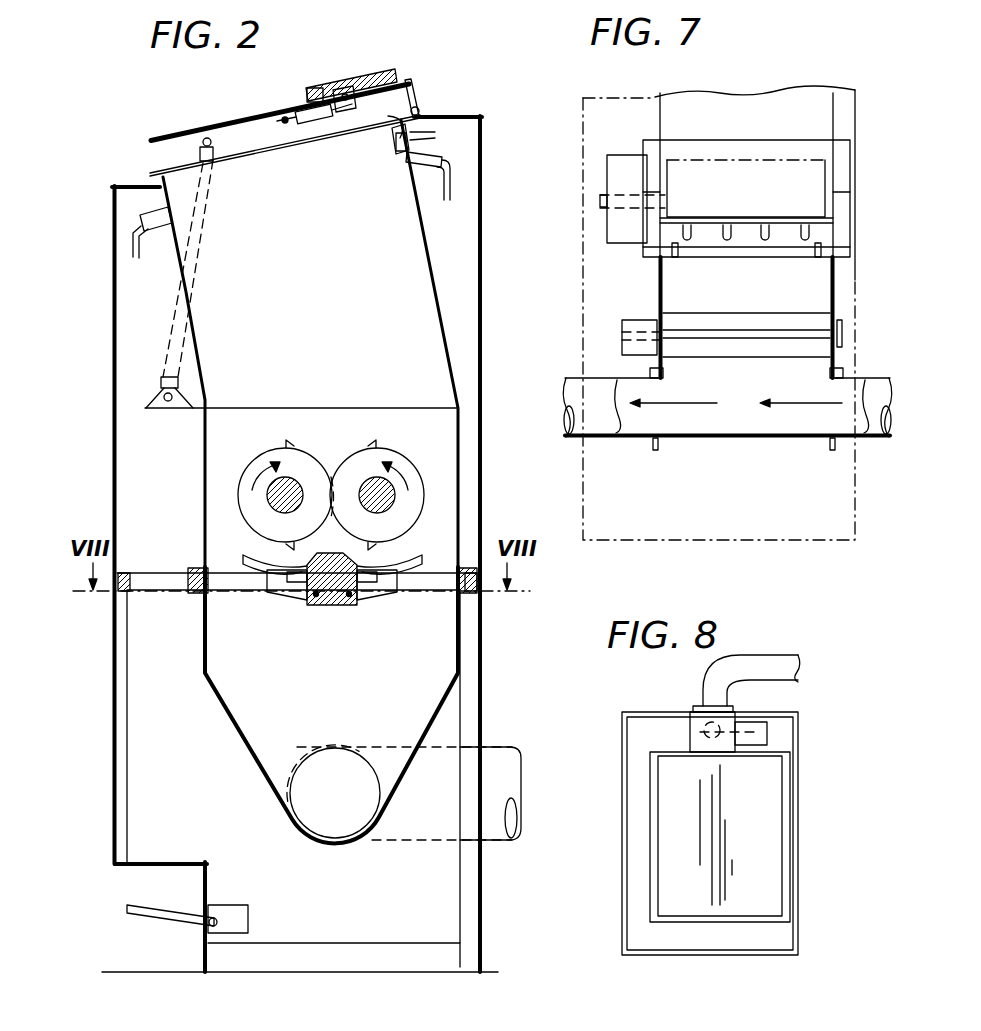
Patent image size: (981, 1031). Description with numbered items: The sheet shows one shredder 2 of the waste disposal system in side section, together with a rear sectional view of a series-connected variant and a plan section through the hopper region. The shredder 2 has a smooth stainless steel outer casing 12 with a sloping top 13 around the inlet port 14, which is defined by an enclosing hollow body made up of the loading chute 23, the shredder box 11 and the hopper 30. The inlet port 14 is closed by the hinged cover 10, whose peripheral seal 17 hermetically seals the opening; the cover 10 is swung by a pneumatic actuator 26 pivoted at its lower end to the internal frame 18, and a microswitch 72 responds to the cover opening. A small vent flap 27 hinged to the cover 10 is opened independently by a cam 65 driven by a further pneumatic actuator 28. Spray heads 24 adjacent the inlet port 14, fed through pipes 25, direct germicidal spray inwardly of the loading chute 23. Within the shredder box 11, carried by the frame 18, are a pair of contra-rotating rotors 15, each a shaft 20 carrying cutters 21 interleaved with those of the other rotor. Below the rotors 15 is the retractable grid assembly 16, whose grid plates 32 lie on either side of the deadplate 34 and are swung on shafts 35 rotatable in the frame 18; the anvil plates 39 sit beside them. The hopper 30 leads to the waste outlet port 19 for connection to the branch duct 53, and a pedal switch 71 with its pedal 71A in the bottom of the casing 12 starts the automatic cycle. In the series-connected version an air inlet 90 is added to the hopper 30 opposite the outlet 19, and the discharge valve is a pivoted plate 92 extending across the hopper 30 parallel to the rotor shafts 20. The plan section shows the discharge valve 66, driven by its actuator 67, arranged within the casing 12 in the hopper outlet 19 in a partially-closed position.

In FIG. 2, the shredder 2 is at (490, 668).
In FIG. 7, the shredder 2 is at (860, 265).
In FIG. 8, the shredder 2 is at (805, 738).
In FIG. 2, the inlet port cover 10 is at (245, 112).
In FIG. 2, the shredder box 11 is at (203, 460).
In FIG. 7, the shredder box 11 is at (852, 152).
In FIG. 2, the outer casing 12 is at (483, 456).
In FIG. 8, the outer casing 12 is at (622, 946).
In FIG. 2, the sloping top 13 is at (141, 184).
In FIG. 2, the inlet port 14 is at (298, 187).
In FIG. 2, the rotor 15 is at (240, 455).
In FIG. 7, the rotor 15 is at (752, 201).
In FIG. 2, the retractable grid assembly 16 is at (288, 612).
In FIG. 2, the peripheral seal 17 is at (322, 138).
In FIG. 2, the internal frame 18 is at (116, 652).
In FIG. 2, the waste outlet port 19 is at (346, 805).
In FIG. 7, the waste outlet port 19 is at (643, 425).
In FIG. 8, the waste outlet port 19 is at (725, 833).
In FIG. 2, the rotor shaft 20 is at (374, 485).
In FIG. 7, the rotor shaft 20 is at (598, 202).
In FIG. 2, the cutter 21 is at (262, 438).
In FIG. 7, the loading chute 23 is at (760, 123).
In FIG. 2, the spray head 24 is at (200, 216).
In FIG. 2, the pipe 25 is at (146, 256).
In FIG. 2, the pneumatic actuator 26 is at (198, 258).
In FIG. 2, the vent flap 27 is at (383, 72).
In FIG. 2, the pneumatic actuator 28 is at (362, 126).
In FIG. 2, the hopper 30 is at (238, 726).
In FIG. 7, the hopper 30 is at (666, 279).
In FIG. 8, the hopper 30 is at (661, 883).
In FIG. 2, the grid plate 32 is at (248, 568).
In FIG. 2, the deadplate 34 is at (345, 556).
In FIG. 2, the shaft 35 is at (348, 600).
In FIG. 2, the anvil plate 39 is at (240, 557).
In FIG. 2, the branch duct 53 is at (498, 846).
In FIG. 8, the branch duct 53 is at (776, 662).
In FIG. 2, the cam 65 is at (363, 72).
In FIG. 8, the discharge valve 66 is at (690, 725).
In FIG. 7, the discharge valve actuator 67 is at (646, 318).
In FIG. 2, the pedal switch 71 is at (250, 906).
In FIG. 2, the pedal 71A is at (170, 918).
In FIG. 2, the microswitch 72 is at (410, 118).
In FIG. 7, the air inlet 90 is at (836, 420).
In FIG. 7, the pivoted plate 92 is at (725, 348).